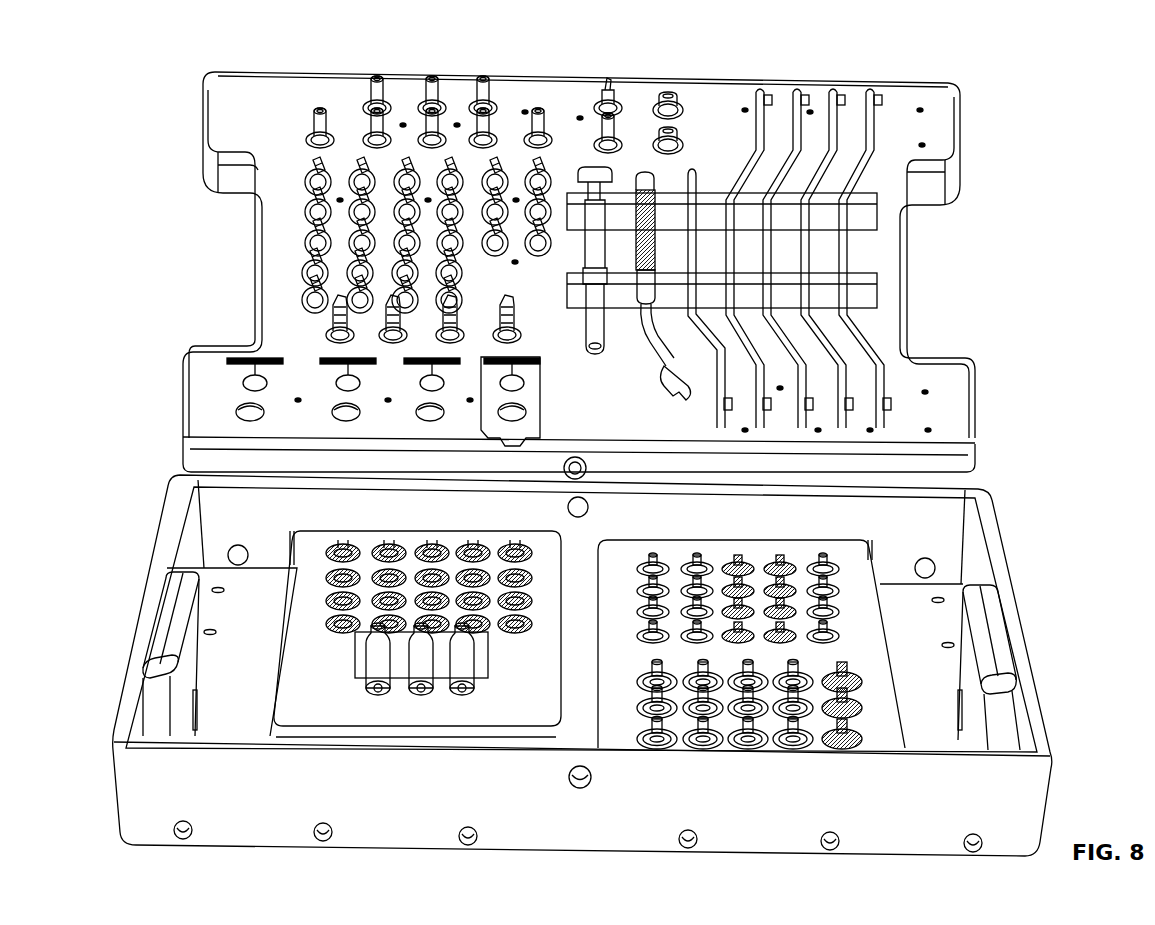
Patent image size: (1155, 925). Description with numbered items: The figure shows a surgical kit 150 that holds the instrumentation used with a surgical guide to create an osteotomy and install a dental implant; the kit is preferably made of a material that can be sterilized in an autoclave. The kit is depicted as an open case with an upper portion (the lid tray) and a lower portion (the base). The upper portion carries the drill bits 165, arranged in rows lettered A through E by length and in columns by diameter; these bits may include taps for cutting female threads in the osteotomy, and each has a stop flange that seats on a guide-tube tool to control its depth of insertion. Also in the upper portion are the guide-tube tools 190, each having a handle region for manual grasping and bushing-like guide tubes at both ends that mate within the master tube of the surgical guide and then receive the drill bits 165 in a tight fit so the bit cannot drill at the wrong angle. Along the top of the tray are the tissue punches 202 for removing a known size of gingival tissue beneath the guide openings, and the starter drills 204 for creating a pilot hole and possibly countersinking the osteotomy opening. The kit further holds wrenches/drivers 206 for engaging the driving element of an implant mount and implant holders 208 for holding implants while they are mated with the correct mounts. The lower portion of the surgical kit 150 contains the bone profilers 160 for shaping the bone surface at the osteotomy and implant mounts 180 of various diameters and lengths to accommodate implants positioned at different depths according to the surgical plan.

The surgical kit 150 is at (1012, 70).
The bone profilers 160 is at (372, 698).
The drill bits 165 is at (276, 262).
The implant mounts 180 is at (312, 596).
The guide-tube tools 190 is at (878, 262).
The tissue punches 202 is at (505, 97).
The starter drills 204 is at (562, 134).
The wrenches/drivers 206 is at (688, 105).
The implant holders 208 is at (642, 415).